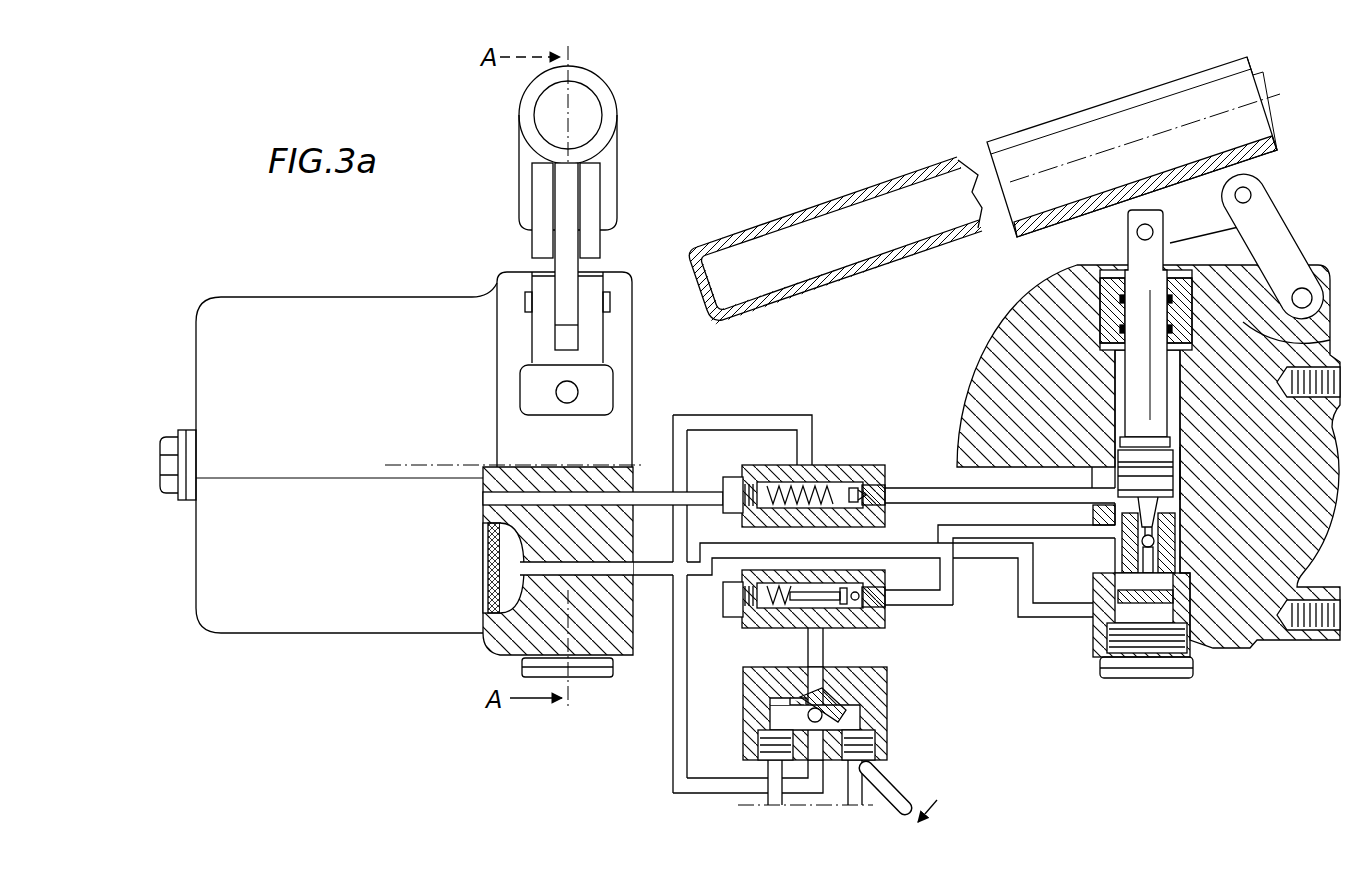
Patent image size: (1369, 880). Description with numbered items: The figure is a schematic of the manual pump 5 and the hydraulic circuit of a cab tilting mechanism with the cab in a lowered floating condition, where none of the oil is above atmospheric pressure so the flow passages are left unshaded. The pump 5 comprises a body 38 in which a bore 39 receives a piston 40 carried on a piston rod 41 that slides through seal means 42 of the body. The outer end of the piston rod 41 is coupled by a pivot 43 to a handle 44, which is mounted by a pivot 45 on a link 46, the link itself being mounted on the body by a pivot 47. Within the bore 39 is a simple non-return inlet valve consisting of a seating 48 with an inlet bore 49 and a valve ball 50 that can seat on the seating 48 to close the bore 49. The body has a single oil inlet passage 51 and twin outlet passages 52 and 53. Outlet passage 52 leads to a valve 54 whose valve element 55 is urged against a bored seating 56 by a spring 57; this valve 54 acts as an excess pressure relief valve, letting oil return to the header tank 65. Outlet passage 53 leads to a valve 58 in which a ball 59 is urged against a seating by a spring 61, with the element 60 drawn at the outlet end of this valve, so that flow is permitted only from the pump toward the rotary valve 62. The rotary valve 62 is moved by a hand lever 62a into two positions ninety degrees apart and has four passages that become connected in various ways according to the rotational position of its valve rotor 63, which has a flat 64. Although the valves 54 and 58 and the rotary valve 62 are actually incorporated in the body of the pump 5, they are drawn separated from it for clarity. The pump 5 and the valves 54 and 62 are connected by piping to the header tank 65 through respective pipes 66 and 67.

The manual pump 5 is at (486, 258).
The body 38 is at (1308, 437).
The bore 39 is at (1181, 364).
The piston 40 is at (1182, 460).
The piston rod 41 is at (1161, 328).
The seal means 42 is at (1190, 290).
The pivot 43 is at (1137, 232).
The handle 44 is at (1008, 143).
The pivot 45 is at (1252, 195).
The link 46 is at (1295, 245).
The pivot 47 is at (1313, 298).
The seating 48 is at (1176, 527).
The inlet bore 49 is at (1154, 560).
The valve ball 50 is at (1188, 512).
The oil inlet passage 51 is at (1095, 612).
The outlet passage 52 is at (1100, 494).
The outlet passage 53 is at (1098, 533).
The valve 54 is at (831, 458).
The valve element 55 is at (847, 483).
The bored seating 56 is at (873, 484).
The spring 57 is at (790, 486).
The valve 58 is at (831, 584).
The ball 59 is at (857, 606).
The plug 60 is at (885, 617).
The spring 61 is at (830, 608).
The rotary valve 62 is at (841, 720).
The hand lever 62a is at (878, 783).
The valve rotor 63 is at (822, 710).
The flat 64 is at (797, 702).
The header tank 65 is at (334, 612).
The pipe 66 is at (660, 566).
The pipe 67 is at (645, 493).